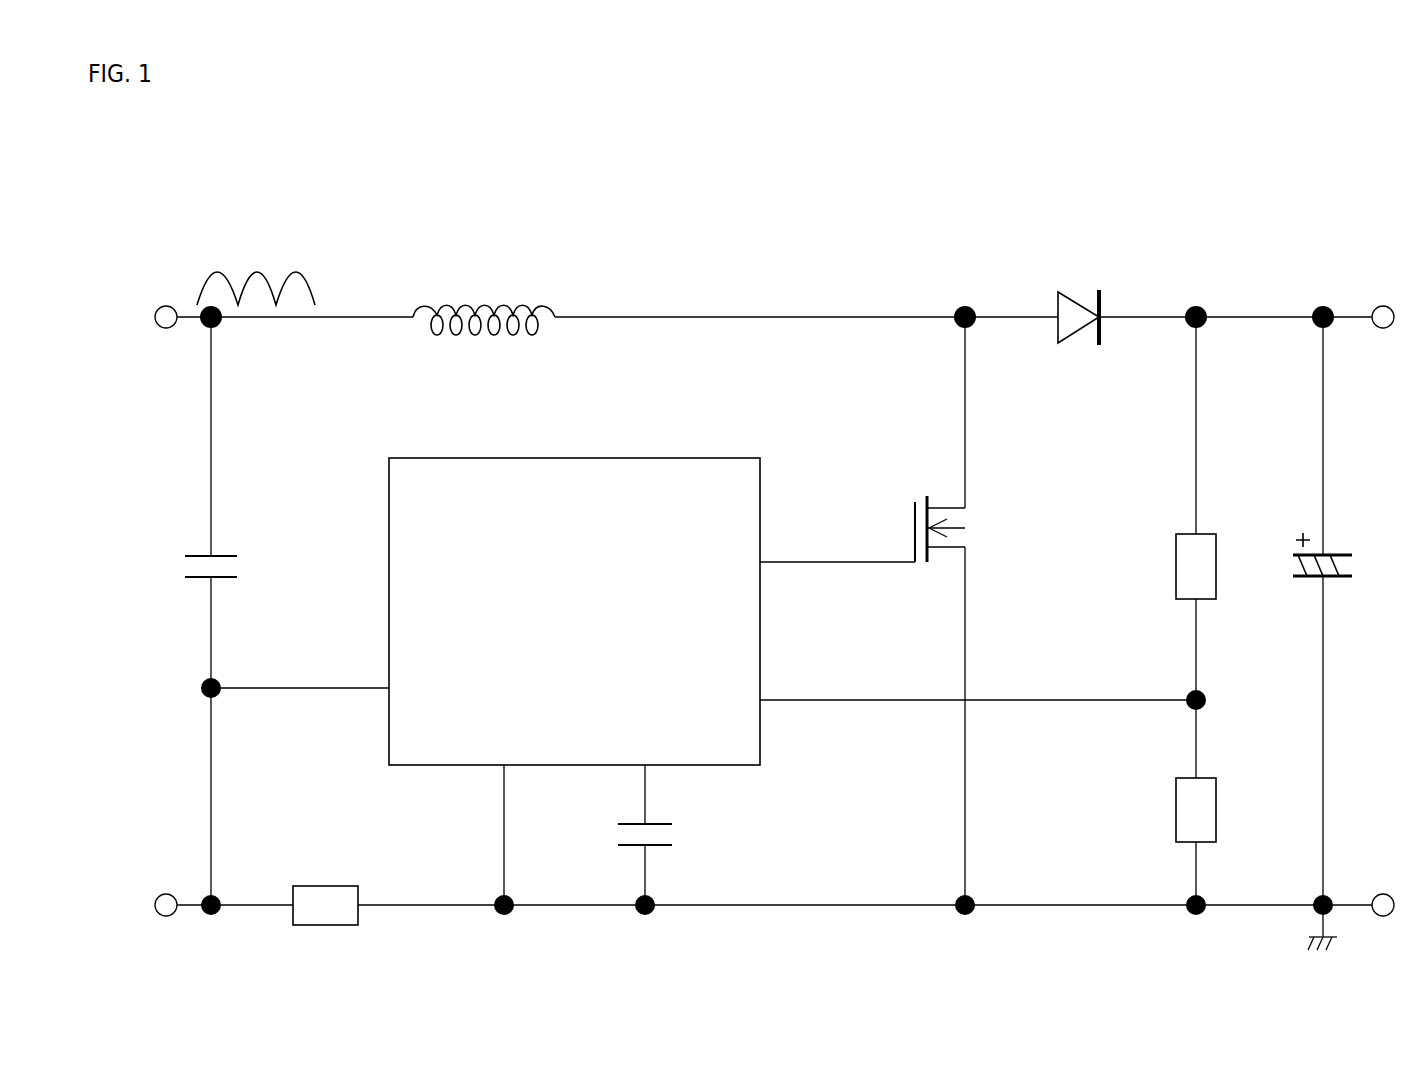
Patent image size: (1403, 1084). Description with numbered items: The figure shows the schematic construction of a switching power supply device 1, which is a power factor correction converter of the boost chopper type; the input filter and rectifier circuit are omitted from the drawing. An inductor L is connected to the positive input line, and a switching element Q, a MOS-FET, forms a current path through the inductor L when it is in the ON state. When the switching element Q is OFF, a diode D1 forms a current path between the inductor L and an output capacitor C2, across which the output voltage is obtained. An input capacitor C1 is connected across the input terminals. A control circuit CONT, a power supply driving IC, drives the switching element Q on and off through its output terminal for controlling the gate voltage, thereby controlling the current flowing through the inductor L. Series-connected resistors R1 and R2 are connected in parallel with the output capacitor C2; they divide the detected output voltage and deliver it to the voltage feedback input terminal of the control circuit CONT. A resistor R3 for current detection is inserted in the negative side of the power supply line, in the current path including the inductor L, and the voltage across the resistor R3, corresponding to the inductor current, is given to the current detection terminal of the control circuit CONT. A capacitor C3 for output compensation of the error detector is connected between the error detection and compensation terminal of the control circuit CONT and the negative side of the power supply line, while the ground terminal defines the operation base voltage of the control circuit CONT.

The switching power supply device 1 is at (698, 264).
The inductor L is at (484, 291).
The diode D1 is at (1080, 299).
The input capacitor C1 is at (228, 502).
The output capacitor C2 is at (1343, 611).
The capacitor for output compensation C3 is at (672, 835).
The resistor R1 is at (1165, 508).
The resistor R2 is at (1169, 802).
The resistor for current detection R3 is at (325, 886).
The switching element Q is at (862, 611).
The control circuit CONT is at (574, 591).